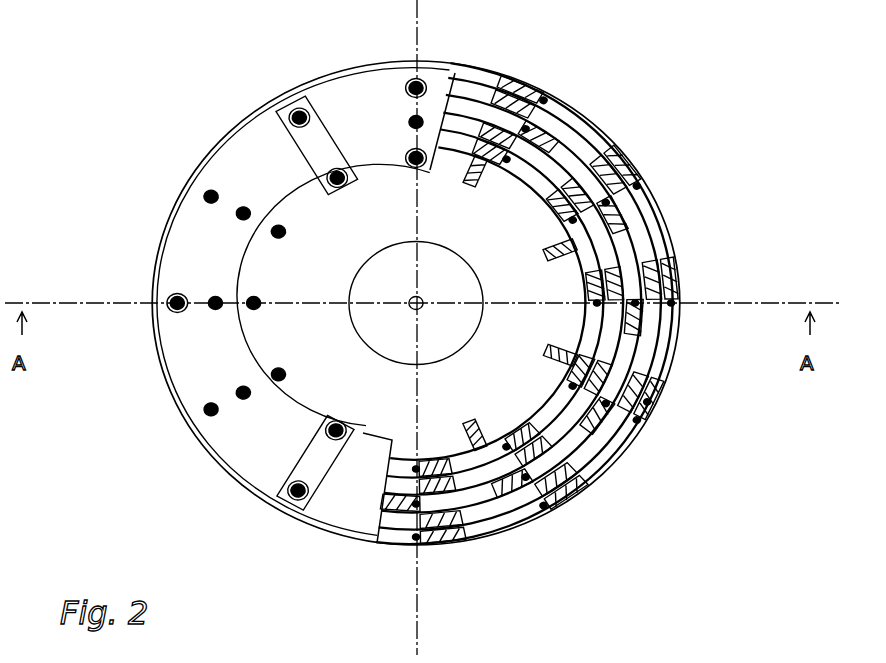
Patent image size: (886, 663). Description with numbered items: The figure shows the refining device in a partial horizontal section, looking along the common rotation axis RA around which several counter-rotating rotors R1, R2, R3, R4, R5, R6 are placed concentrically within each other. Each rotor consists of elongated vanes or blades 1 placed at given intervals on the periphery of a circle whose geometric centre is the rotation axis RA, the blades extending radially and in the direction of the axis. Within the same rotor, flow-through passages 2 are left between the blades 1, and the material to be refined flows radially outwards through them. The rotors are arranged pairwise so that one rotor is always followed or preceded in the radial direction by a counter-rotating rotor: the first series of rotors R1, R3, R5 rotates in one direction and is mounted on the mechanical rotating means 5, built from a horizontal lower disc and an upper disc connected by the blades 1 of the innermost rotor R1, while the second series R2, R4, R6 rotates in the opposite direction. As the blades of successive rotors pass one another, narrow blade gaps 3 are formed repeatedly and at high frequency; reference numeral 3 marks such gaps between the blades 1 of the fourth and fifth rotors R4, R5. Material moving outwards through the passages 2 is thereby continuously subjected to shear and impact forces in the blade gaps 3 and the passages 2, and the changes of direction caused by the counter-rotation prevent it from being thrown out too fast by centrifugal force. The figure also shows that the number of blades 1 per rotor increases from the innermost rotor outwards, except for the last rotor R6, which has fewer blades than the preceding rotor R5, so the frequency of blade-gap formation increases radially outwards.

The blades 1 is at (522, 82).
The flow-through passages 2 is at (645, 385).
The blade gaps 3 is at (640, 366).
The mechanical rotating means 5 is at (341, 108).
The first rotor R1 is at (467, 93).
The second rotor R2 is at (540, 90).
The third rotor R3 is at (545, 116).
The fourth rotor R4 is at (576, 142).
The fifth rotor R5 is at (590, 150).
The sixth rotor R6 is at (610, 145).
The rotation axis RA is at (408, 300).